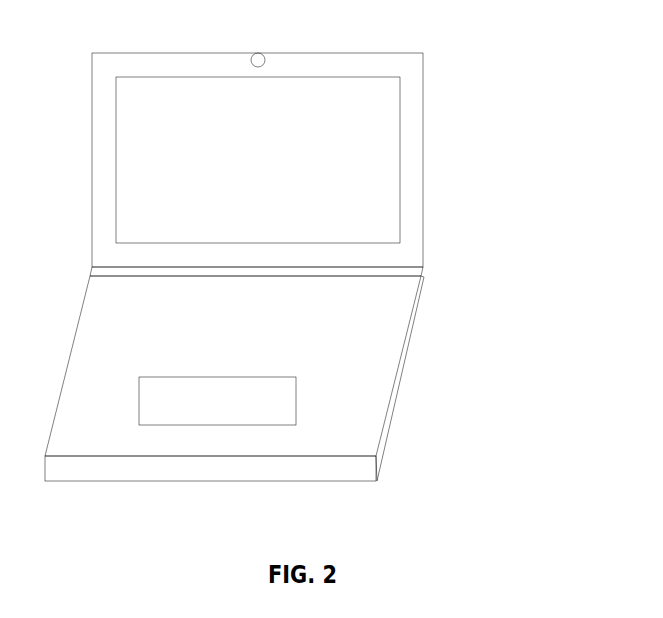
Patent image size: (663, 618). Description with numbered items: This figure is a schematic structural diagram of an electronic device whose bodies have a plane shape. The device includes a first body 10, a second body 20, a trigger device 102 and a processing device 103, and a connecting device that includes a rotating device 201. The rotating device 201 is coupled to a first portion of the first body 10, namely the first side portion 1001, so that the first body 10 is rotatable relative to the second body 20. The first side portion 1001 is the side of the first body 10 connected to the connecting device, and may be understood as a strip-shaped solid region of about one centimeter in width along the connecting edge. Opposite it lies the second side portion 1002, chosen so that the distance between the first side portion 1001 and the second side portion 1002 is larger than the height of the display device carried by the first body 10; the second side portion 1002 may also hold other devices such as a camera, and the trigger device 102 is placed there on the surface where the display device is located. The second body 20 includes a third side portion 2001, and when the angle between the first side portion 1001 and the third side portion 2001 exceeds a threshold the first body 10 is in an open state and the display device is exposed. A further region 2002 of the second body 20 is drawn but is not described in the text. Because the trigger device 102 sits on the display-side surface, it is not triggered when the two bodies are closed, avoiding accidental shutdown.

The first body 10 is at (423, 115).
The trigger device 102 is at (266, 60).
The second side portion 1002 is at (312, 67).
The first side portion 1001 is at (360, 267).
The rotating device 201 is at (425, 269).
The second body 20 is at (408, 352).
The third side portion 2001 is at (360, 276).
The front face of base 2002 is at (217, 456).
The processing device 103 is at (296, 385).